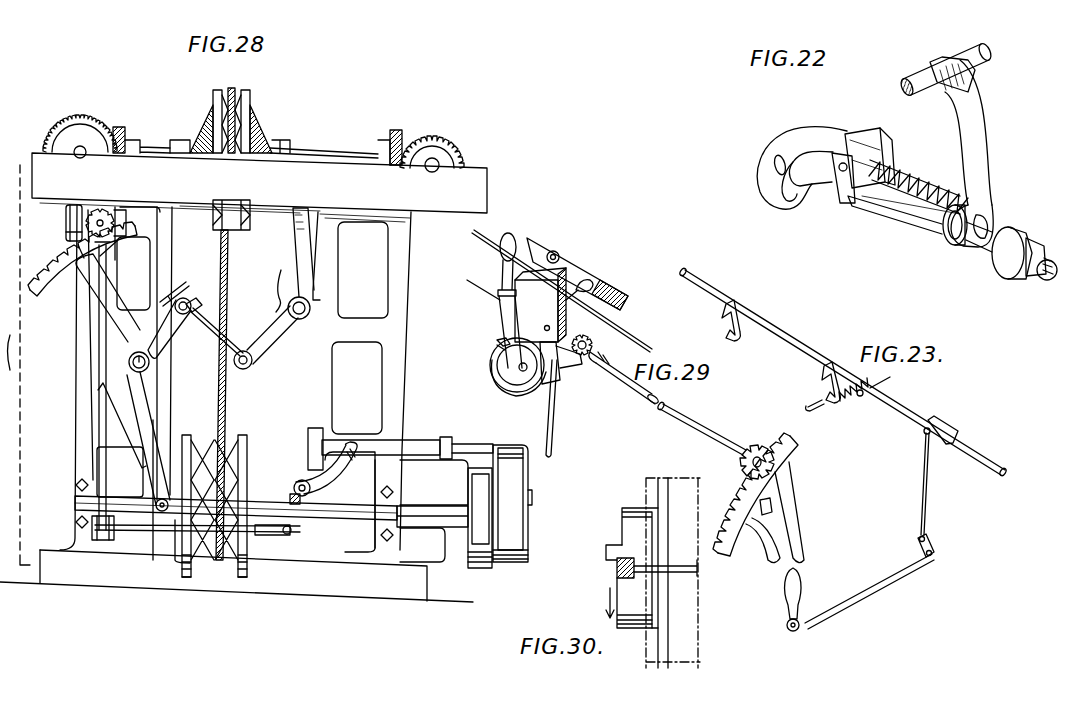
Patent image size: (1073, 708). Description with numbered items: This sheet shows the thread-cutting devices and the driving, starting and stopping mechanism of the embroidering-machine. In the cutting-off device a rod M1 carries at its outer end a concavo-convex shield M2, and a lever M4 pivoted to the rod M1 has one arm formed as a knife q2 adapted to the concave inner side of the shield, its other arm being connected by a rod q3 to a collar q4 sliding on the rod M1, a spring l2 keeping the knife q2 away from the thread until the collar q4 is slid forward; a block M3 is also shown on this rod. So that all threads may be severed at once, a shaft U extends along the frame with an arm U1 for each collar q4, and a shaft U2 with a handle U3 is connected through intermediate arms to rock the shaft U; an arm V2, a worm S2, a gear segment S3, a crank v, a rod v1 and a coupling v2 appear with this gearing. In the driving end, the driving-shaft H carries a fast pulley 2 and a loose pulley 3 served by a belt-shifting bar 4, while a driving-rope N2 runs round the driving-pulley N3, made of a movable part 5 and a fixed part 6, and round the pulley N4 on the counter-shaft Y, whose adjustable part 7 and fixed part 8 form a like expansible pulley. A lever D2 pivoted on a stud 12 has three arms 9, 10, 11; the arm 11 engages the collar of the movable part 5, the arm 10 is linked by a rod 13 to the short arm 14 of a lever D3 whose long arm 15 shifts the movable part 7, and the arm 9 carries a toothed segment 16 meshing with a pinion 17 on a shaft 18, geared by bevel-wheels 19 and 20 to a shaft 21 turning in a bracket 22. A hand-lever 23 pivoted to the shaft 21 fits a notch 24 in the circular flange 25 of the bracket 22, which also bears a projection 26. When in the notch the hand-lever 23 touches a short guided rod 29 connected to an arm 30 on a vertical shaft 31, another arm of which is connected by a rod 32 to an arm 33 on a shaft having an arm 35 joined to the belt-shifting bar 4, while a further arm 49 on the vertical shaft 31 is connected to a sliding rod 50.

In FIG. 28, the fast pulley 2 is at (480, 529).
In FIG. 28, the loose pulley 3 is at (512, 517).
In FIG. 28, the belt-shifting bar 4 is at (474, 438).
In FIG. 28, the movable part of driving-pulley 5 is at (186, 581).
In FIG. 28, the fixed part of driving-pulley 6 is at (236, 581).
In FIG. 28, the adjustable part of counter-shaft pulley 7 is at (270, 126).
In FIG. 28, the fixed part of counter-shaft pulley 8 is at (191, 126).
In FIG. 28, the arm of lever D² 9 is at (118, 300).
In FIG. 23, the arm of lever D² 9 is at (784, 523).
In FIG. 28, the arm of lever D² 10 is at (169, 320).
In FIG. 28, the arm of lever D² 11 is at (150, 420).
In FIG. 28, the stud 12 is at (139, 355).
In FIG. 28, the rod 13 is at (219, 333).
In FIG. 28, the short arm of lever D³ 14 is at (272, 335).
In FIG. 28, the long arm of lever D³ 15 is at (300, 263).
In FIG. 28, the toothed segment 16 is at (82, 259).
In FIG. 23, the toothed segment 16 is at (782, 464).
In FIG. 28, the pinion 17 is at (100, 210).
In FIG. 23, the pinion 17 is at (757, 446).
In FIG. 28, the shaft 18 is at (117, 222).
In FIG. 23, the shaft 18 is at (700, 416).
In FIG. 29, the bevel-wheel 19 is at (600, 358).
In FIG. 29, the bevel-wheel 20 is at (590, 348).
In FIG. 29, the shaft 21 is at (558, 357).
In FIG. 29, the bracket 22 is at (539, 322).
In FIG. 29, the hand-lever 23 is at (517, 318).
In FIG. 30, the hand-lever 23 is at (617, 566).
In FIG. 29, the notch 24 is at (503, 340).
In FIG. 30, the notch 24 is at (612, 580).
In FIG. 29, the circular flange 25 is at (508, 380).
In FIG. 30, the circular flange 25 is at (637, 568).
In FIG. 29, the projection 26 is at (500, 343).
In FIG. 30, the projection 26 is at (612, 548).
In FIG. 29, the short guided rod 29 is at (578, 290).
In FIG. 30, the short guided rod 29 is at (680, 566).
In FIG. 29, the arm 30 is at (580, 272).
In FIG. 28, the vertical shaft 31 is at (116, 258).
In FIG. 29, the vertical shaft 31 is at (558, 414).
In FIG. 28, the rod 32 is at (191, 533).
In FIG. 28, the arm 33 is at (289, 496).
In FIG. 28, the arm 35 is at (337, 462).
In FIG. 29, the arm 49 is at (548, 258).
In FIG. 29, the rod 50 is at (628, 342).
In FIG. 28, the driving-shaft H is at (72, 500).
In FIG. 28, the counter-shaft Y is at (157, 148).
In FIG. 28, the lever D2 is at (108, 395).
In FIG. 28, the lever D3 is at (267, 291).
In FIG. 28, the driving-rope N2 is at (229, 395).
In FIG. 28, the driving-pulley N3 is at (240, 430).
In FIG. 28, the pulley N4 is at (250, 86).
In FIG. 28, the worm S2 is at (397, 136).
In FIG. 28, the gear segment S3 is at (432, 135).
In FIG. 22, the shaft U is at (970, 58).
In FIG. 23, the shaft U is at (843, 371).
In FIG. 23, the arm U1 is at (773, 351).
In FIG. 23, the shaft U2 is at (860, 592).
In FIG. 23, the handle U3 is at (803, 593).
In FIG. 22, the arm V2 is at (986, 124).
In FIG. 22, the rod M1 is at (998, 236).
In FIG. 22, the concavo-convex shield M2 is at (802, 159).
In FIG. 22, the block M3 is at (858, 152).
In FIG. 22, the lever M4 is at (840, 188).
In FIG. 22, the knife q2 is at (737, 135).
In FIG. 22, the rod q3 is at (897, 221).
In FIG. 22, the collar q4 is at (952, 244).
In FIG. 23, the collar q4 is at (848, 398).
In FIG. 22, the spring l2 is at (925, 182).
In FIG. 23, the crank v is at (933, 546).
In FIG. 23, the rod v1 is at (928, 488).
In FIG. 23, the coupling v2 is at (948, 428).